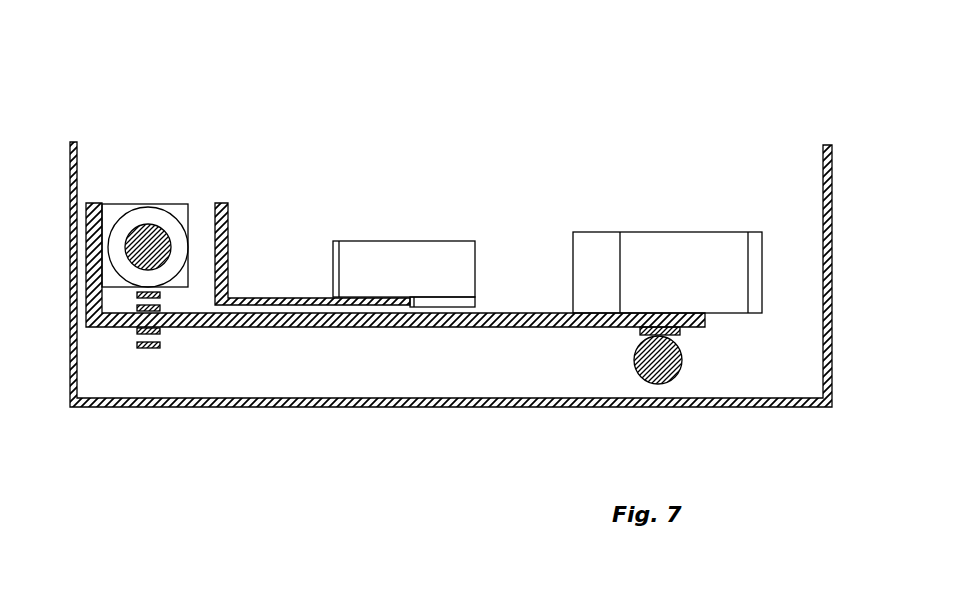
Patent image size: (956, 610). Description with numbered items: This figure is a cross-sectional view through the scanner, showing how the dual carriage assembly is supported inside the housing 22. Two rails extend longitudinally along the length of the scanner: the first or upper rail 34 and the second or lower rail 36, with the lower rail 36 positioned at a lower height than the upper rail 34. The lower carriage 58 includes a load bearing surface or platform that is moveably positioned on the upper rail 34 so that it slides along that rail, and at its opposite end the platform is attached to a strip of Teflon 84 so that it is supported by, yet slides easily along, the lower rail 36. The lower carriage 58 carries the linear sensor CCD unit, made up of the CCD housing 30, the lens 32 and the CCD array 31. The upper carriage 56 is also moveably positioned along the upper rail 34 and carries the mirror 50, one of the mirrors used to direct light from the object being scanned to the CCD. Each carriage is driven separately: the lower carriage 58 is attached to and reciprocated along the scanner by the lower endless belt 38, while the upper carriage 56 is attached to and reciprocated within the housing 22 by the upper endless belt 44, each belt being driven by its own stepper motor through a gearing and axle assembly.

The housing 22 is at (832, 256).
The CCD housing 30 is at (675, 225).
The CCD array 31 is at (755, 240).
The lens 32 is at (593, 248).
The first rail 34 is at (148, 236).
The second rail 36 is at (670, 360).
The lower endless belt 38 is at (137, 338).
The upper endless belt 44 is at (137, 300).
The mirror 50 is at (390, 263).
The upper carriage 56 is at (228, 236).
The lower carriage 58 is at (338, 313).
The strip of Teflon 84 is at (640, 331).